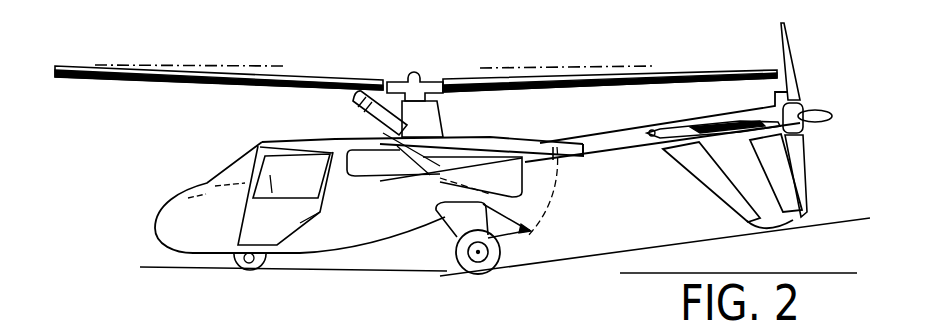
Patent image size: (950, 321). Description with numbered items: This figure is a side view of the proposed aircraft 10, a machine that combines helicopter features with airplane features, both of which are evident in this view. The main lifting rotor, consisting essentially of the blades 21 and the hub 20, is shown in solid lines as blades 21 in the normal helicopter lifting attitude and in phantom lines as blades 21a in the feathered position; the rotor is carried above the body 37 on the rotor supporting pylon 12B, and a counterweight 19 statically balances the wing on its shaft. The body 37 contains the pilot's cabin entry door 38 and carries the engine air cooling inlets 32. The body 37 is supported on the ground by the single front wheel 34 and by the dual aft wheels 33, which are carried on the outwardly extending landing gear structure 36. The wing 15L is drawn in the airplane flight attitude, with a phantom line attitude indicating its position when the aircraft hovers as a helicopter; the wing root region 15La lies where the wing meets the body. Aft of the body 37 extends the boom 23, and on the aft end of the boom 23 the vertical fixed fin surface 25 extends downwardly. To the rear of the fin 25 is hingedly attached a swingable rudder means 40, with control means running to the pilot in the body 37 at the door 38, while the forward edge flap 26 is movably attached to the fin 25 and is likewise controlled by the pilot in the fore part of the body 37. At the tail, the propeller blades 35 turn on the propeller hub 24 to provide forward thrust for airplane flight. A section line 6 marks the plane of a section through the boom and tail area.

The compound helicopter aircraft 10 is at (347, 68).
The rotor blades 21 is at (248, 80).
The rotor blades in feathered position 21a is at (133, 67).
The rotor hub 20 is at (418, 78).
The rotor mast 12B is at (423, 114).
The counterweight 19 is at (350, 147).
The body 37 is at (170, 215).
The pilot's cabin entry door 38 is at (282, 228).
The single front wheel 34 is at (240, 265).
The engine air cooling inlets 32 is at (341, 164).
The left wing 15L is at (455, 135).
The left wing root sponson 15La is at (480, 190).
The boom 23 is at (562, 138).
The landing gear structure 36 is at (528, 228).
The dual aft wheels 33 is at (506, 248).
The section line 6 is at (608, 170).
The forward edge flap 26 is at (730, 195).
The swingable rudder means 40 is at (805, 187).
The vertical fixed fin surface 25 is at (788, 218).
The propeller blades 35 is at (788, 47).
The tail rotor hub 24 is at (832, 119).